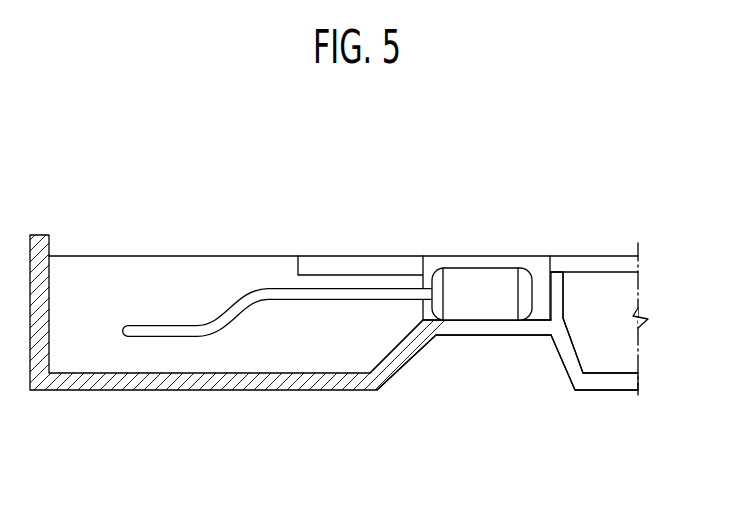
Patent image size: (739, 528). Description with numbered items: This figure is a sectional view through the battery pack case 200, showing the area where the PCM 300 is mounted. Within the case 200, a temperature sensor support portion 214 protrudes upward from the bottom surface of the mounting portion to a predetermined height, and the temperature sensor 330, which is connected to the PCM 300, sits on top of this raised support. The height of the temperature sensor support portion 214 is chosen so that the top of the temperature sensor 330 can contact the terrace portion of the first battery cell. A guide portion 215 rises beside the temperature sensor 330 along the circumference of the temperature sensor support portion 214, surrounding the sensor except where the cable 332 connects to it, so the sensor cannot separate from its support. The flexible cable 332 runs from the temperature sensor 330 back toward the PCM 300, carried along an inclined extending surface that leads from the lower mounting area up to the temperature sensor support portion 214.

The case 200 is at (172, 378).
The PCM 300 is at (165, 281).
The temperature sensor 330 is at (472, 302).
The cable 332 is at (252, 297).
The temperature sensor support portion 214 is at (505, 327).
The guide portion 215 is at (567, 287).